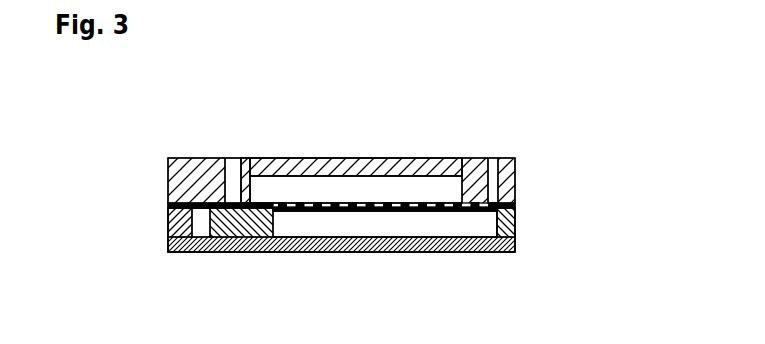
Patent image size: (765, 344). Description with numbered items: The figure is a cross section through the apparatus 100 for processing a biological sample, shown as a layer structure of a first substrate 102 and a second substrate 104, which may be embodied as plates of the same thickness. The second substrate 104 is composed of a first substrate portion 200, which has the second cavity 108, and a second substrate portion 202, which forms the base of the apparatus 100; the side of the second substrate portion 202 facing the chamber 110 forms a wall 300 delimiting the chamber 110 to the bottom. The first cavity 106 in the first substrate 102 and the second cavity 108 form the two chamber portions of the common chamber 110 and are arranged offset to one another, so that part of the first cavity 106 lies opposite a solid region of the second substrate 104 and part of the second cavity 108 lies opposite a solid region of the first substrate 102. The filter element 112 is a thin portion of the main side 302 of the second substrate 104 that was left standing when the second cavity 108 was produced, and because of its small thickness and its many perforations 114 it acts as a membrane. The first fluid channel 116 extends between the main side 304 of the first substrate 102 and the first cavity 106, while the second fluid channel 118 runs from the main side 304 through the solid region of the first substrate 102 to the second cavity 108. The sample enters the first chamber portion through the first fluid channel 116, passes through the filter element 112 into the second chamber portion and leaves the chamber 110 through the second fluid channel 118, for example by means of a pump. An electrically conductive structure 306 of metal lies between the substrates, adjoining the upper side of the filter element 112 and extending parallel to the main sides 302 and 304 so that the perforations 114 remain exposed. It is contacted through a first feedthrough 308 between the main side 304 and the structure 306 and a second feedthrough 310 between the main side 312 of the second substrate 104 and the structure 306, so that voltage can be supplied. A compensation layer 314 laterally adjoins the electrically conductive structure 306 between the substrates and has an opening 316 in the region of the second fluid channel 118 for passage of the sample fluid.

The apparatus 100 is at (171, 141).
The first substrate 102 is at (167, 169).
The second substrate 104 is at (546, 241).
The first cavity 106 is at (353, 190).
The second cavity 108 is at (488, 225).
The chamber 110 is at (383, 238).
The filter element 112 is at (412, 212).
The perforations 114 is at (320, 216).
The first fluid channel 116 is at (266, 160).
The second fluid channel 118 is at (494, 167).
The first substrate portion 200 is at (167, 222).
The second substrate portion 202 is at (167, 246).
The wall 300 is at (348, 236).
The main side 302 is at (473, 216).
The main side 304 is at (307, 178).
The electrically conductive structure 306 is at (433, 200).
The first feedthrough 308 is at (229, 160).
The second feedthrough 310 is at (203, 226).
The main side 312 is at (250, 228).
The compensation layer 314 is at (167, 203).
The opening 316 is at (517, 208).